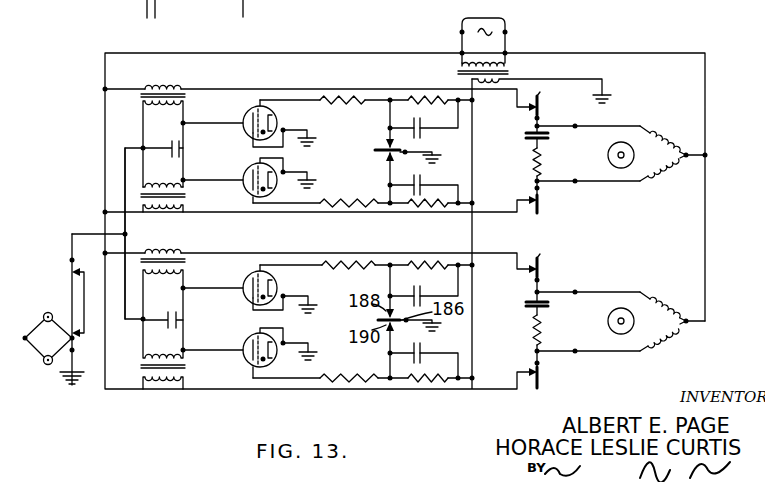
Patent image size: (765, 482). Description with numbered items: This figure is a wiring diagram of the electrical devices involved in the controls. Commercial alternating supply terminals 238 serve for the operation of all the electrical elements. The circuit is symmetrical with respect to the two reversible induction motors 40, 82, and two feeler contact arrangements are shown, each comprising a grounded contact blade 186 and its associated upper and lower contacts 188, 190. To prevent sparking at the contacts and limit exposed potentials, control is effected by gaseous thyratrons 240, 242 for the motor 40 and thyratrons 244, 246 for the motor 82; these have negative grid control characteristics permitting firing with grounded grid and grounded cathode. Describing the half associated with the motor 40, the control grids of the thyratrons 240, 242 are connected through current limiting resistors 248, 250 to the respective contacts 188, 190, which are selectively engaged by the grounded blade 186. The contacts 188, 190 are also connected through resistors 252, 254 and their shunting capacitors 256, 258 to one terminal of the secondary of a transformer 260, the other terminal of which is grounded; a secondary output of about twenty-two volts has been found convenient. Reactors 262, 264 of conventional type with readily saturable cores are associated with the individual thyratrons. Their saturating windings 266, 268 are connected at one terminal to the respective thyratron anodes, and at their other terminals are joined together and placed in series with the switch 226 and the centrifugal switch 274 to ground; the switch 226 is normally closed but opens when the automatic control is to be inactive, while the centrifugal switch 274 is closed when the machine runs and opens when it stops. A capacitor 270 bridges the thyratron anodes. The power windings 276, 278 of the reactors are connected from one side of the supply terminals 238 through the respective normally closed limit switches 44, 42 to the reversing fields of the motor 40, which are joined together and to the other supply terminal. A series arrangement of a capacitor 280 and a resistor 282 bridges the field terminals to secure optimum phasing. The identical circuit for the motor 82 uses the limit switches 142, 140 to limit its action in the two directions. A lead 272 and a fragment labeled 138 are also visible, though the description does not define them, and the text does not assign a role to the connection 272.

The lead 138 is at (228, 12).
The alternating supply terminals 238 is at (462, 19).
The transformer 260 is at (524, 73).
The reactor 262 is at (164, 146).
The reactor 264 is at (183, 214).
The saturating winding 266 is at (162, 108).
The saturating winding 268 is at (160, 186).
The capacitor 270 is at (184, 146).
The lead 272 is at (124, 170).
The centrifugal switch 274 is at (32, 318).
The power winding 276 is at (170, 85).
The power winding 278 is at (150, 207).
The switch 226 is at (70, 269).
The gaseous thyratron 240 is at (243, 112).
The gaseous thyratron 242 is at (243, 177).
The gaseous thyratron 244 is at (243, 278).
The gaseous thyratron 246 is at (243, 343).
The current limiting resistor 248 is at (340, 98).
The current limiting resistor 250 is at (350, 205).
The resistor 252 is at (418, 98).
The resistor 254 is at (424, 208).
The shunting capacitor 256 is at (420, 120).
The shunting capacitor 258 is at (424, 182).
The contact blade 186 is at (402, 150).
The upper contact 188 is at (386, 143).
The lower contact 190 is at (386, 155).
The capacitor 280 is at (528, 139).
The resistor 282 is at (528, 166).
The limit switch 44 is at (541, 100).
The limit switch 42 is at (539, 212).
The limit switch 142 is at (540, 263).
The limit switch 140 is at (540, 385).
The reversible electric motor 40 is at (632, 193).
The motor 82 is at (632, 362).